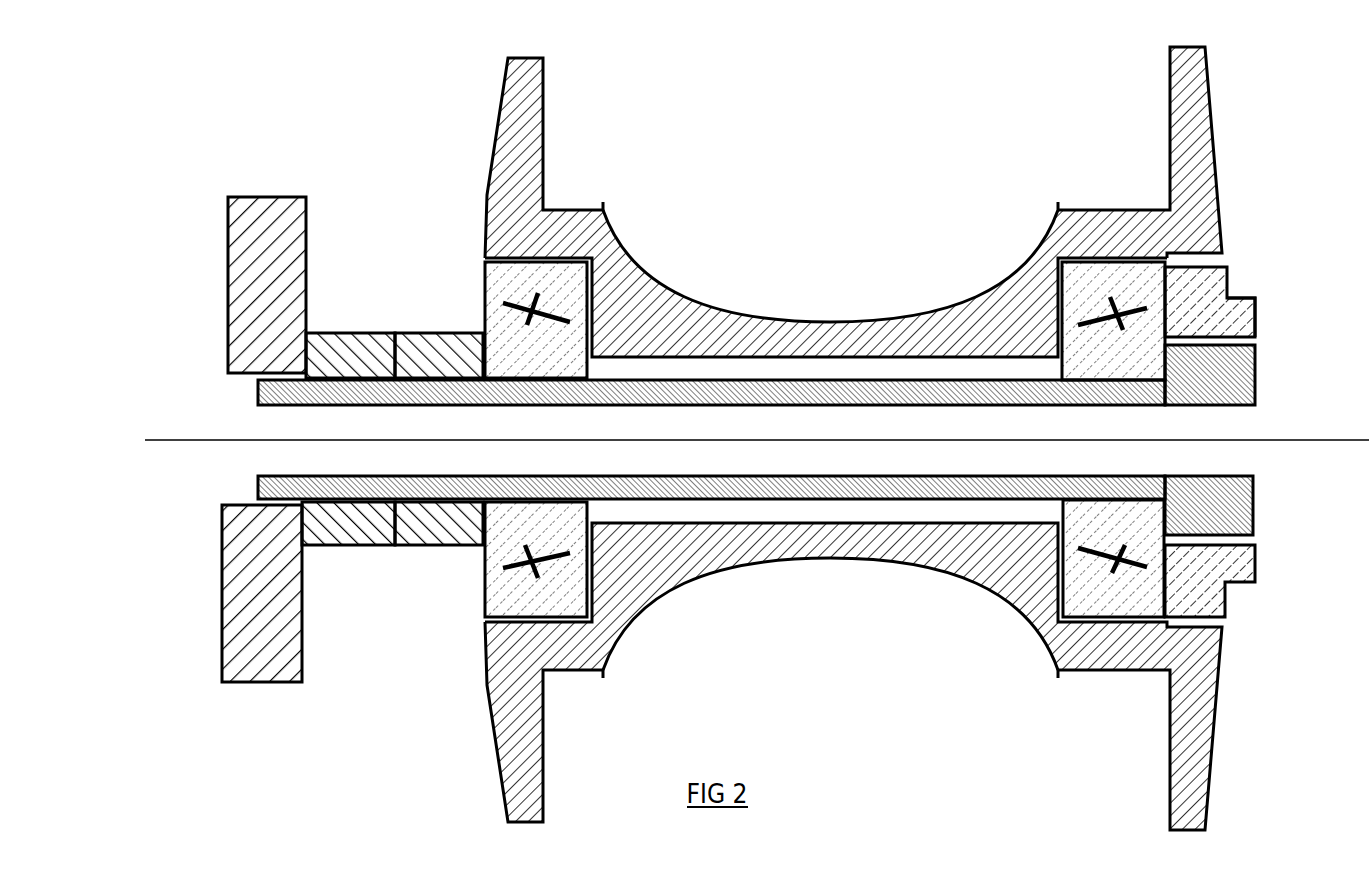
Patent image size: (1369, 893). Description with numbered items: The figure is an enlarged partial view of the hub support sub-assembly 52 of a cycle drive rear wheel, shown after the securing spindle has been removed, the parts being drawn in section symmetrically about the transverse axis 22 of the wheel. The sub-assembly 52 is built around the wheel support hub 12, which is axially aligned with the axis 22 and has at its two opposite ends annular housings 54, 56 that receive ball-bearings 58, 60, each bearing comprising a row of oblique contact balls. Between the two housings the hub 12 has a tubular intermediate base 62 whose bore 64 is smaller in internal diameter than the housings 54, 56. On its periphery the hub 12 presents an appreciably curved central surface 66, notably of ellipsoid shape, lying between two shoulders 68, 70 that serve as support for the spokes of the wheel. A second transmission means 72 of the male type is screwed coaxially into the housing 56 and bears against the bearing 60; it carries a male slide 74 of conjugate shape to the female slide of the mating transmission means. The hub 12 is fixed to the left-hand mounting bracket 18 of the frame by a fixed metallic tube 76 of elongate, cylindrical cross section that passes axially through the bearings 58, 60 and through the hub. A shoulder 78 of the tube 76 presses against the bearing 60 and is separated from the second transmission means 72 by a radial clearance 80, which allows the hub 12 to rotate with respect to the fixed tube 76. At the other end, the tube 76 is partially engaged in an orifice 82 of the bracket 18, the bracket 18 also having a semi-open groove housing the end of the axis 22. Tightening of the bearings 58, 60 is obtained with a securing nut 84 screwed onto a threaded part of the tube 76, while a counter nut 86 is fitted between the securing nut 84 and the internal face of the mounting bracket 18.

The hub 12 is at (623, 577).
The fixing bracket 18 is at (250, 582).
The transverse axis 22 is at (195, 440).
The second sub-assembly 52 is at (977, 816).
The annular housing 54 is at (563, 250).
The annular housing 56 is at (1117, 252).
The ball-bearing 58 is at (498, 278).
The ball-bearing 60 is at (1137, 297).
The tubular intermediate base 62 is at (633, 315).
The bore 64 is at (783, 525).
The curved central surface 66 is at (920, 308).
The shoulder 68 is at (528, 128).
The shoulder 70 is at (1180, 120).
The second transmission means 72 is at (1227, 298).
The male slide 74 is at (1248, 295).
The fixed metallic tube 76 is at (992, 395).
The shoulder 78 is at (1220, 383).
The radial clearance 80 is at (1237, 537).
The orifice 82 is at (248, 342).
The securing nut 84 is at (412, 533).
The counter nut 86 is at (348, 527).